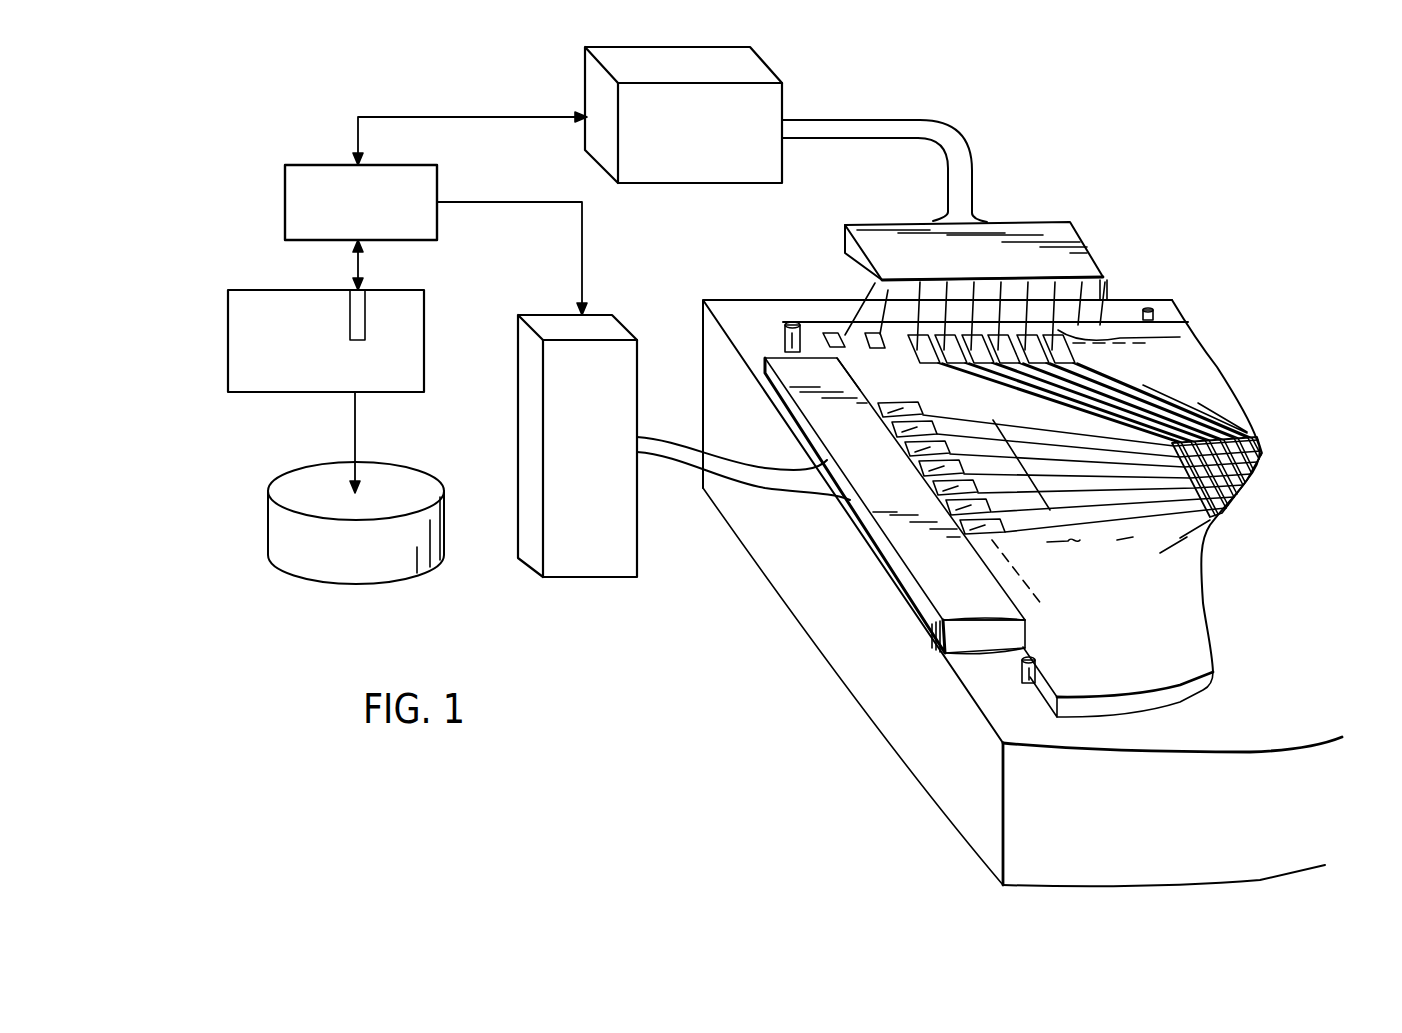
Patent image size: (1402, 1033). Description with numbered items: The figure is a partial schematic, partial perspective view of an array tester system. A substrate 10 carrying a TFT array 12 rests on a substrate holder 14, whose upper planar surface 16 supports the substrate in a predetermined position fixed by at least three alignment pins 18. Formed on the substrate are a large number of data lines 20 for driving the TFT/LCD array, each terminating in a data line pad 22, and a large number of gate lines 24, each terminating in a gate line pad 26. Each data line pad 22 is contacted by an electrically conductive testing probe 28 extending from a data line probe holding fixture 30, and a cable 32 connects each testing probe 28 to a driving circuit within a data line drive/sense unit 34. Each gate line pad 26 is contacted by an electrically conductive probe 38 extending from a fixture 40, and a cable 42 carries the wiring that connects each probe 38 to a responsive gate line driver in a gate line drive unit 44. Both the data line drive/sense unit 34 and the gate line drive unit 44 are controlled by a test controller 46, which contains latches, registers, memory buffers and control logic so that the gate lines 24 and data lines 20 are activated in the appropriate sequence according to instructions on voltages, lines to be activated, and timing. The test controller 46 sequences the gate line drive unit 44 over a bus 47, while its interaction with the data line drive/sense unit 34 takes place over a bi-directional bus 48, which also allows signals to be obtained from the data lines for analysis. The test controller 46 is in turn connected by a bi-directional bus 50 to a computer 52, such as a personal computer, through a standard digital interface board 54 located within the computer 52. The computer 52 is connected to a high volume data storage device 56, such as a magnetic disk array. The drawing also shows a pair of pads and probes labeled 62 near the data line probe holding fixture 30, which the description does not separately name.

The substrate 10 is at (1200, 603).
The TFT array 12 is at (1266, 456).
The substrate holder 14 is at (928, 767).
The upper planar surface 16 is at (1028, 713).
The alignment pins 18 is at (785, 335).
The data lines 20 is at (1207, 394).
The data line pad 22 is at (1073, 360).
The gate lines 24 is at (1075, 535).
The gate line pad 26 is at (905, 400).
The testing probe 28 is at (1180, 336).
The data line probe holding fixture 30 is at (1057, 227).
The cable 32 is at (963, 162).
The data line drive/sense unit 34 is at (773, 163).
The probe 38 is at (858, 392).
The fixture 40 is at (930, 582).
The cable 42 is at (678, 462).
The gate line drive unit 44 is at (640, 565).
The test controller 46 is at (285, 212).
The bus 47 is at (588, 270).
The bi-directional bus 48 is at (465, 115).
The bi-directional bus 50 is at (355, 263).
The computer 52 is at (418, 348).
The digital interface board 54 is at (357, 307).
The data storage device 56 is at (437, 540).
The probes 62 is at (870, 333).